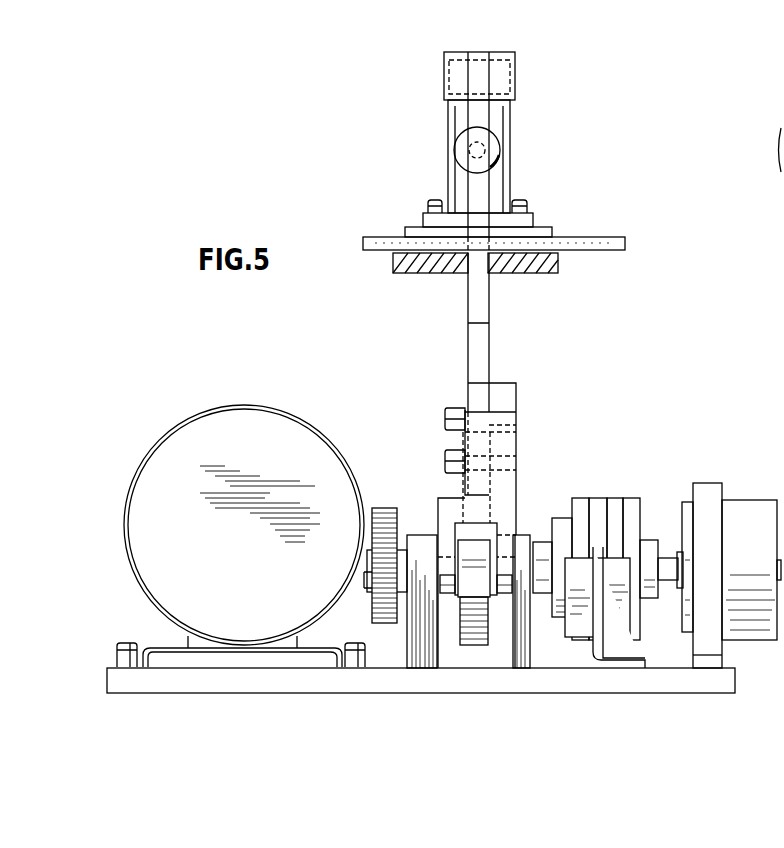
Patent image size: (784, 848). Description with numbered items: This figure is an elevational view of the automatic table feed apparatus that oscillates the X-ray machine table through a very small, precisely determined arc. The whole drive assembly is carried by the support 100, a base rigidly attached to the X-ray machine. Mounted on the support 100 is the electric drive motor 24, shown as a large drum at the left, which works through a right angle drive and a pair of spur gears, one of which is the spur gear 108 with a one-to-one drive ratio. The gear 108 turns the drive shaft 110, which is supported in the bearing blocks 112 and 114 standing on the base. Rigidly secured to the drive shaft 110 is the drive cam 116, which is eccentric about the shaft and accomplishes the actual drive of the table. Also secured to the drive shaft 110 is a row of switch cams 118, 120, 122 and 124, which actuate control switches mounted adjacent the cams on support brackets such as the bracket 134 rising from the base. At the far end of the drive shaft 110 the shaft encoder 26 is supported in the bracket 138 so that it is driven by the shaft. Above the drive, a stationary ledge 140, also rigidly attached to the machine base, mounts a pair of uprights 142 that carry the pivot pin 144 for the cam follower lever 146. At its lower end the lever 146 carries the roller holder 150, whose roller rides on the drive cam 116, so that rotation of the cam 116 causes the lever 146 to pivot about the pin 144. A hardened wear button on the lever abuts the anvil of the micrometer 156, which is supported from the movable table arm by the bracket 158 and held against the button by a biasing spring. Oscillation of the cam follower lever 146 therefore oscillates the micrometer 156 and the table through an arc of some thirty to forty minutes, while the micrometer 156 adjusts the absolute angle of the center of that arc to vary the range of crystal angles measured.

The electric drive motor 24 is at (304, 428).
The shaft encoder 26 is at (745, 500).
The support 100 is at (522, 680).
The spur gear 108 is at (384, 508).
The drive shaft 110 is at (538, 545).
The bearing block 112 is at (424, 535).
The bearing block 114 is at (516, 533).
The drive cam 116 is at (472, 645).
The switch cam 118 is at (580, 498).
The switch cam 120 is at (599, 498).
The switch cam 122 is at (618, 498).
The switch cam 124 is at (636, 500).
The support bracket 134 is at (630, 668).
The bracket 138 is at (722, 661).
The stationary ledge 140 is at (558, 272).
The upright 142 is at (511, 113).
The pivot pin 144 is at (517, 80).
The cam follower lever 146 is at (489, 297).
The roller holder 150 is at (516, 441).
The micrometer 156 is at (500, 160).
The bracket 158 is at (494, 187).